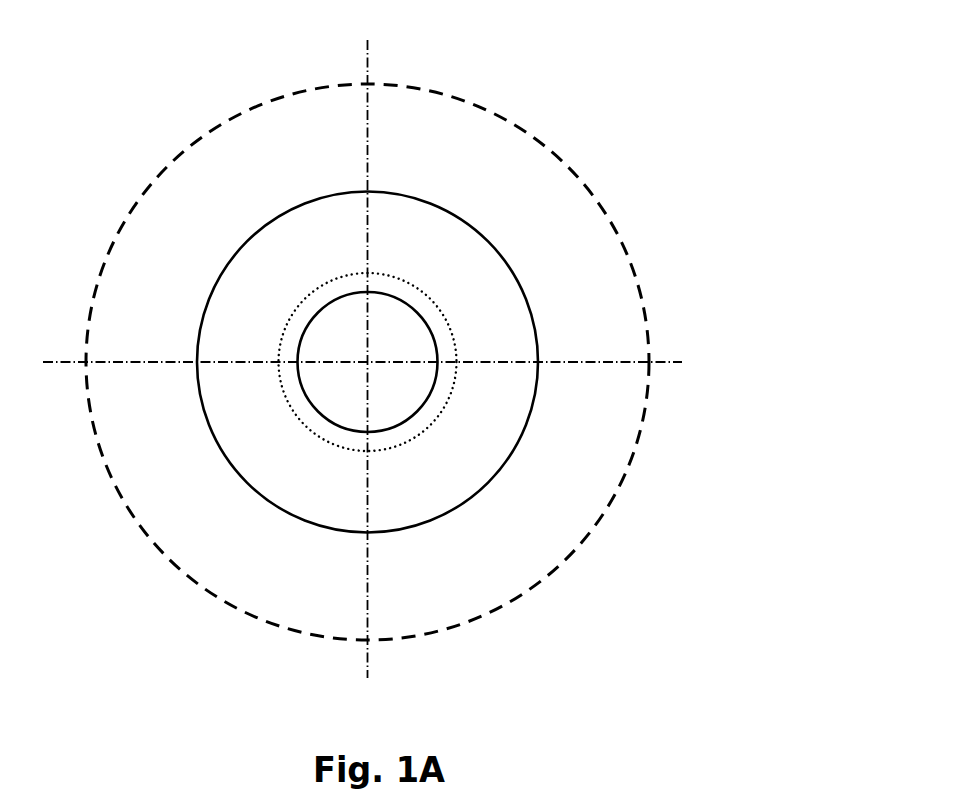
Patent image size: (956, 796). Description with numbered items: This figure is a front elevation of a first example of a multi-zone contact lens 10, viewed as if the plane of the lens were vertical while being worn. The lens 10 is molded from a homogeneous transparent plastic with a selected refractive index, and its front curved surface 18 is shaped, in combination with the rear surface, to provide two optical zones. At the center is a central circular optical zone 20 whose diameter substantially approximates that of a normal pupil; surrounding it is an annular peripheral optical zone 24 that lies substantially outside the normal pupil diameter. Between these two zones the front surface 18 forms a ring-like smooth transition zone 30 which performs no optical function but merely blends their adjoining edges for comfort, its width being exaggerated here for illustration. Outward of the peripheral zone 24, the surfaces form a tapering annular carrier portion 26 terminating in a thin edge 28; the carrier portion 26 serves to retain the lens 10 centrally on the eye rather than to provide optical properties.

The contact lens 10 is at (556, 56).
The front curved surface 18 is at (598, 246).
The central circular optical zone 20 is at (373, 330).
The annular peripheral optical zone 24 is at (485, 255).
The tapering annular carrier portion 26 is at (587, 495).
The thin edge 28 is at (522, 593).
The transition zone 30 is at (410, 430).